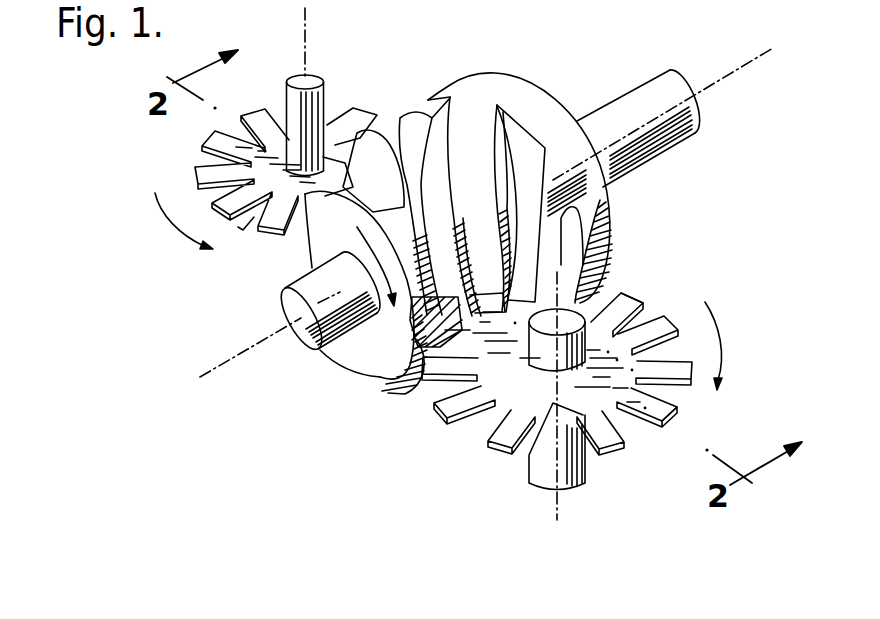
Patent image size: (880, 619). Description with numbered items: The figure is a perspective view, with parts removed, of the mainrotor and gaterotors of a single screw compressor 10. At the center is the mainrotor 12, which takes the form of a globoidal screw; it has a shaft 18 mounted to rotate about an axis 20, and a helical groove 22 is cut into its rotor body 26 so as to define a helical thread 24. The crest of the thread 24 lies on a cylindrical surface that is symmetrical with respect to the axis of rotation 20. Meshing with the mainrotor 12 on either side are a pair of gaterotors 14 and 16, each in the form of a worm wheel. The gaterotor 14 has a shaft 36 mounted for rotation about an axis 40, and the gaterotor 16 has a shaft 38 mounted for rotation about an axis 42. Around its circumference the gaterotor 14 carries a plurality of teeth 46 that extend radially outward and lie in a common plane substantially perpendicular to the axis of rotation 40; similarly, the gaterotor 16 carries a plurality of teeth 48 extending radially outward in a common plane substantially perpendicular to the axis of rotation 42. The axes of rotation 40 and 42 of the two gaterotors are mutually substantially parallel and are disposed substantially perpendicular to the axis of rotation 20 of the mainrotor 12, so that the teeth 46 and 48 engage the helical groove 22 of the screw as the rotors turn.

The single screw compressor 10 is at (411, 80).
The mainrotor 12 is at (458, 206).
The gaterotor 14 is at (186, 172).
The gaterotor 16 is at (692, 421).
The shaft 18 is at (636, 82).
The axis 20 is at (740, 72).
The helical groove 22 is at (398, 136).
The helical thread 24 is at (418, 103).
The rotor body 26 is at (505, 86).
The shaft 36 is at (311, 72).
The shaft 38 is at (543, 365).
The axis of rotation 40 is at (308, 22).
The axis of rotation 42 is at (618, 309).
The teeth 46 is at (244, 212).
The teeth 48 is at (662, 420).